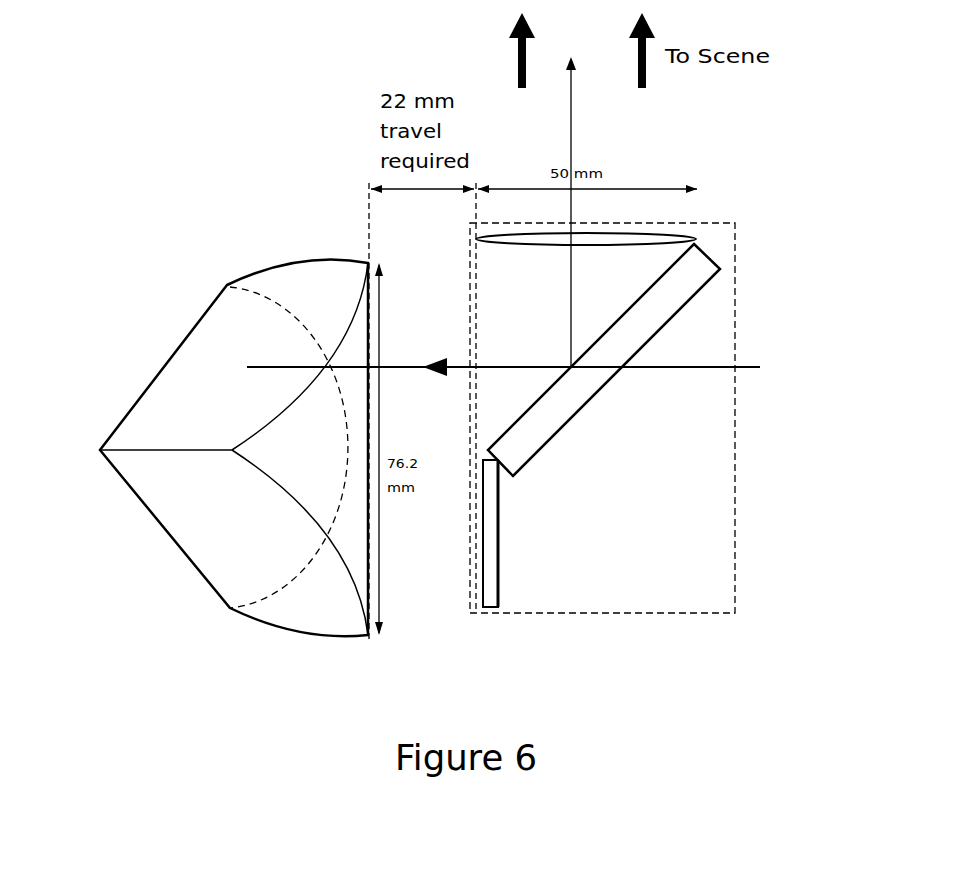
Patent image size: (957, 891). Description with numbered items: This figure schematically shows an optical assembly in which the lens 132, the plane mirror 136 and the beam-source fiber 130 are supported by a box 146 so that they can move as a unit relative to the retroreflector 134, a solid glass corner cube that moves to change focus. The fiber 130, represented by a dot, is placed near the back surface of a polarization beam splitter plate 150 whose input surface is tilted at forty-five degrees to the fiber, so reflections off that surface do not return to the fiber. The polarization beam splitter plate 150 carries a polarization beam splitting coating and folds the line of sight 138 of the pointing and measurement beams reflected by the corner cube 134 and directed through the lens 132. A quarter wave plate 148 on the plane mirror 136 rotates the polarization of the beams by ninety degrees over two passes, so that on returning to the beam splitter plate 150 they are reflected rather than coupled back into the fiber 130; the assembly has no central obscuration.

The fiber 130 is at (700, 370).
The lens 132 is at (700, 237).
The retroreflector 134 is at (210, 528).
The plane mirror 136 is at (502, 528).
The line of sight 138 is at (573, 97).
The box 146 is at (735, 313).
The quarter wave plate 148 is at (490, 613).
The polarization beam splitter plate 150 is at (522, 410).